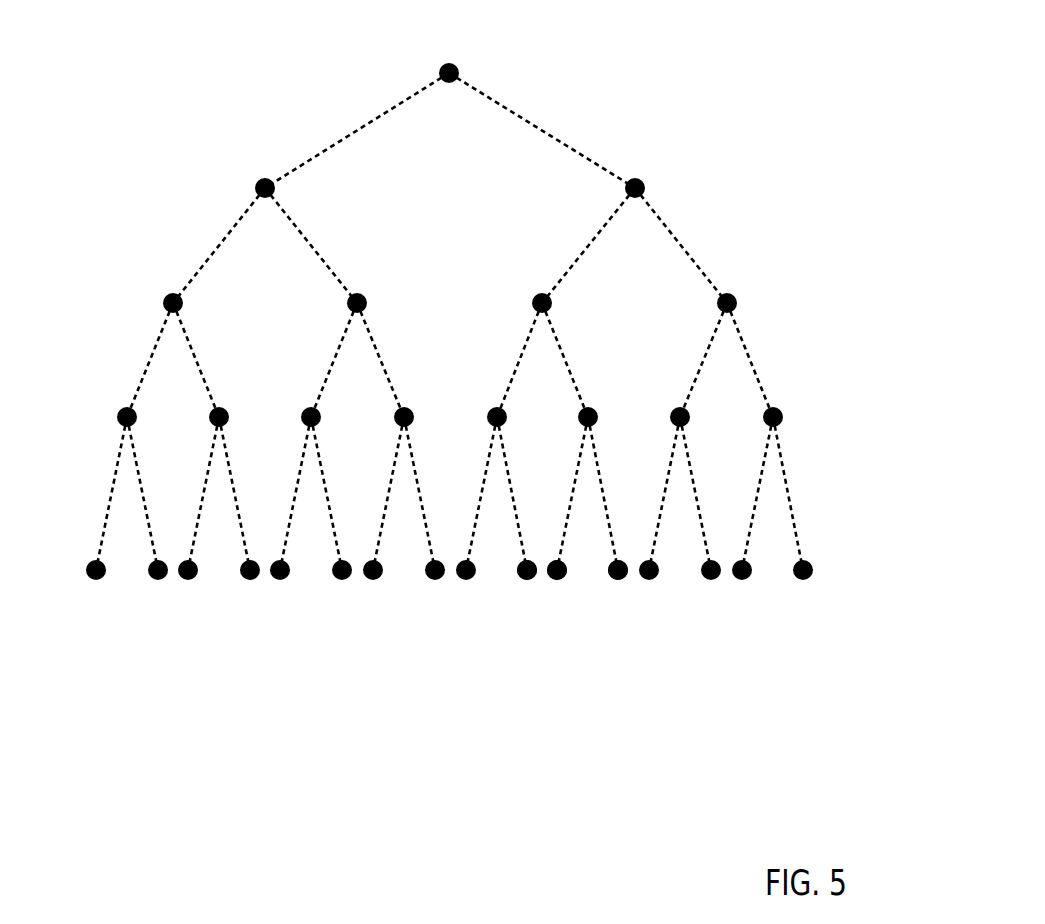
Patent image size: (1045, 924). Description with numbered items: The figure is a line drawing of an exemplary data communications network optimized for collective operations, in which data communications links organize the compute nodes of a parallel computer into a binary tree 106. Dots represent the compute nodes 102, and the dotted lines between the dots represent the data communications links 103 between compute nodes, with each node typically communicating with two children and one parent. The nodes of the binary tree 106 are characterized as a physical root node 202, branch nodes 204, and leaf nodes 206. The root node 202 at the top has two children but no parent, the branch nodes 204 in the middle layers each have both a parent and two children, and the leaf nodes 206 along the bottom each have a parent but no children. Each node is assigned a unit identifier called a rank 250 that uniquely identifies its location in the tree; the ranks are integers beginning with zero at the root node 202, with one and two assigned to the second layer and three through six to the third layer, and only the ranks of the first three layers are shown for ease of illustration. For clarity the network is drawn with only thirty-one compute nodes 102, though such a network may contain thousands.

The physical root node 202 is at (467, 63).
The data communications links 103 is at (367, 123).
The rank 250 is at (597, 198).
The branch nodes 204 is at (826, 136).
The leaf nodes 206 is at (826, 609).
The compute nodes 102 is at (527, 580).
The binary tree 106 is at (486, 415).